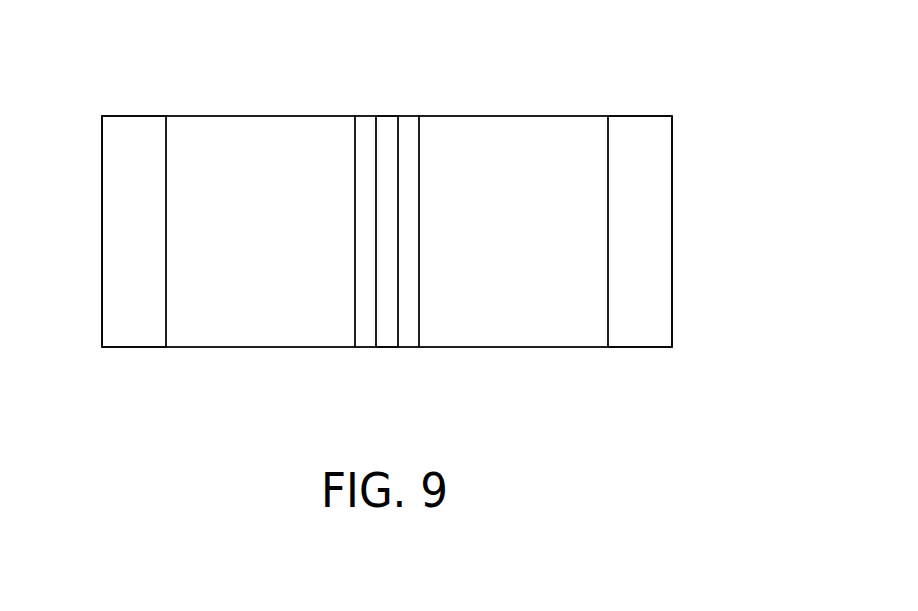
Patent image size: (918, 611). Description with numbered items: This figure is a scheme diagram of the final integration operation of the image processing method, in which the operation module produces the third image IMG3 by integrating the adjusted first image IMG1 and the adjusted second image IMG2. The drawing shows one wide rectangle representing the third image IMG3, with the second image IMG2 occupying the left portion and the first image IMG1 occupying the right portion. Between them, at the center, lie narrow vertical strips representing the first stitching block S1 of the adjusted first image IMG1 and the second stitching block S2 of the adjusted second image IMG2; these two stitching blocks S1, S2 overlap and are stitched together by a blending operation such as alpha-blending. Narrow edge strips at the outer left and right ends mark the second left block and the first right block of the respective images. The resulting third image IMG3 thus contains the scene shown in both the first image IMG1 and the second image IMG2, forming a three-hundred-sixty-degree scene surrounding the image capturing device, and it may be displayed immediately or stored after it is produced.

The third image IMG3 is at (745, 40).
The second image IMG2 is at (260, 116).
The first image IMG1 is at (513, 116).
The first stitching block S1 is at (388, 124).
The second stitching block S2 is at (388, 124).